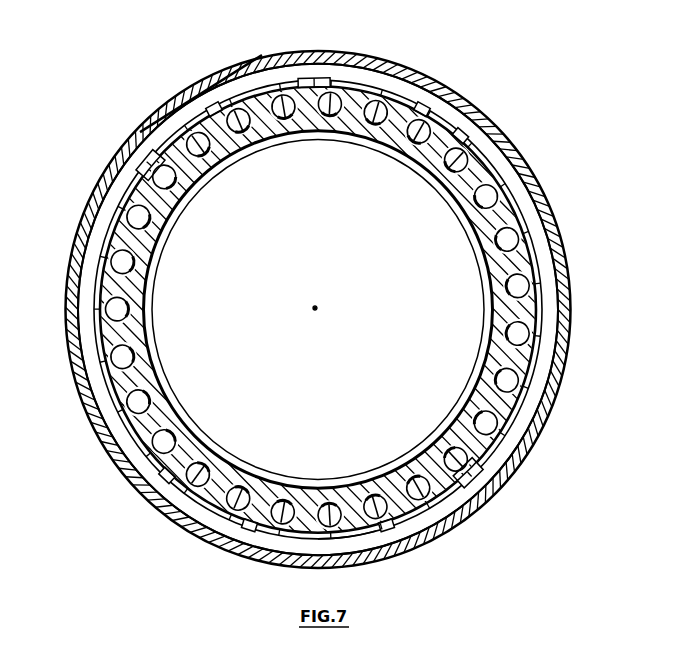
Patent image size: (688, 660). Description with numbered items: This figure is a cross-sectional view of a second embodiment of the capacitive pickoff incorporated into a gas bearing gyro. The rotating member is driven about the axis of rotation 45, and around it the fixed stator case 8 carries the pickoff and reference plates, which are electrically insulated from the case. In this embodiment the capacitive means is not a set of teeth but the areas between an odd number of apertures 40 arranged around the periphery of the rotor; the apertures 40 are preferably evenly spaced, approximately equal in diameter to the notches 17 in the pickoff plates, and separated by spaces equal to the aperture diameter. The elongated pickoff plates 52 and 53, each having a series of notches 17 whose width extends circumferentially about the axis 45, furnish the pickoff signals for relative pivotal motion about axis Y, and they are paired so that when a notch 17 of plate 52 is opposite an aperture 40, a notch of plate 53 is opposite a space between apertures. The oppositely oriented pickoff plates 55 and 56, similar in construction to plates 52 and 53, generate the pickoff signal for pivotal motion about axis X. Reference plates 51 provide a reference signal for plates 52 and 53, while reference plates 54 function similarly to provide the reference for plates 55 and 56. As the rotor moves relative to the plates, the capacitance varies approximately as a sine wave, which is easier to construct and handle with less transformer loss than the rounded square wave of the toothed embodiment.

The stator case 8 is at (566, 330).
The notches 17 is at (110, 221).
The apertures 40 is at (494, 188).
The axis of rotation 45 is at (316, 308).
The reference plates 51 is at (146, 156).
The pickoff plate 52 is at (550, 299).
The pickoff plate 53 is at (92, 303).
The reference plates 54 is at (459, 127).
The pickoff plate 55 is at (314, 76).
The pickoff plate 56 is at (400, 536).